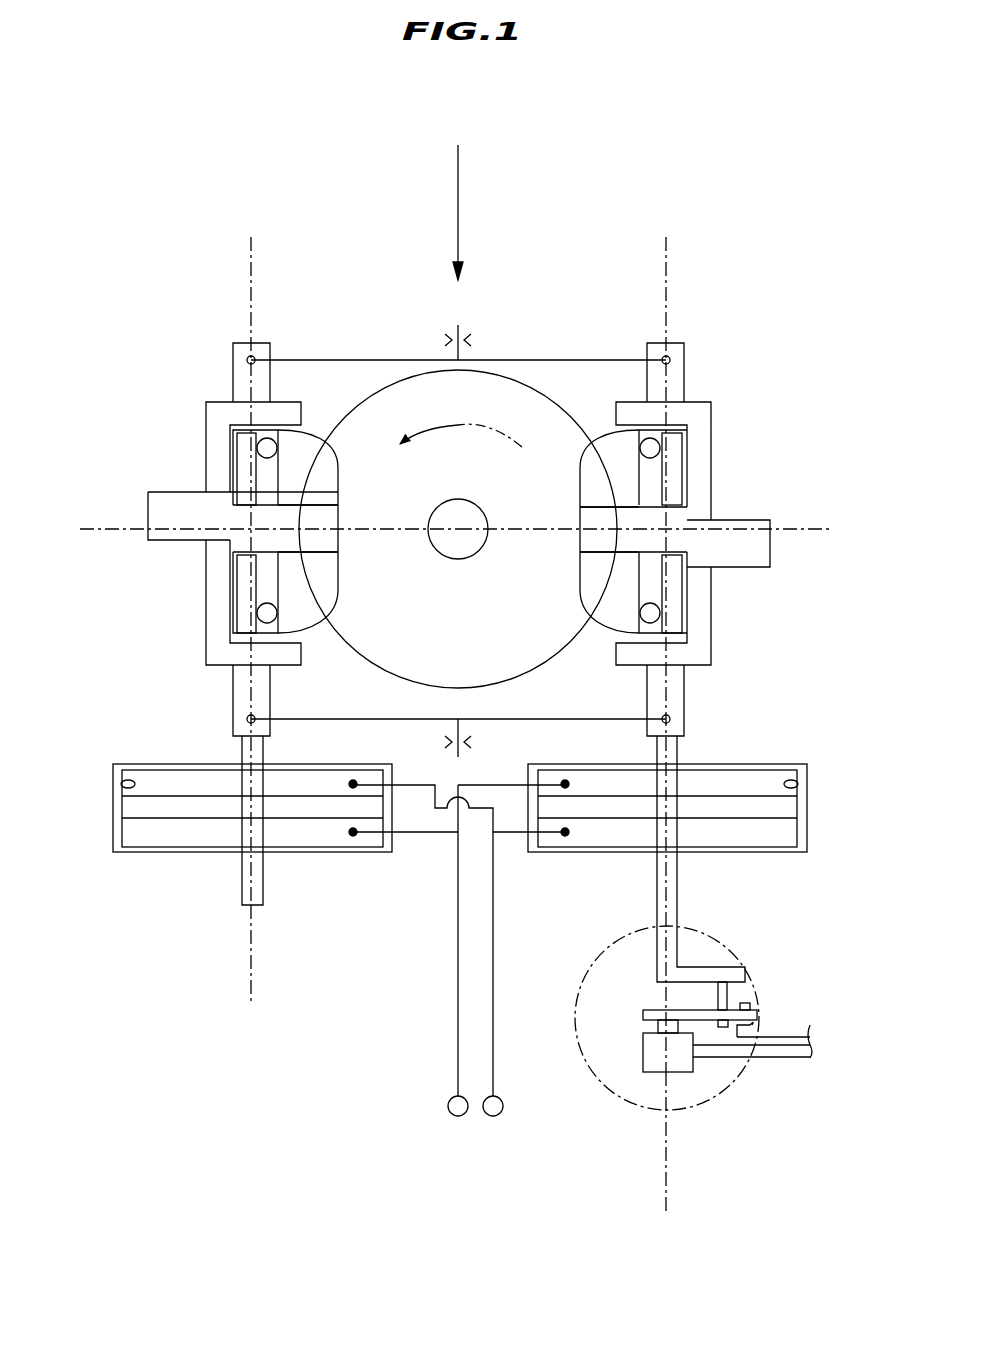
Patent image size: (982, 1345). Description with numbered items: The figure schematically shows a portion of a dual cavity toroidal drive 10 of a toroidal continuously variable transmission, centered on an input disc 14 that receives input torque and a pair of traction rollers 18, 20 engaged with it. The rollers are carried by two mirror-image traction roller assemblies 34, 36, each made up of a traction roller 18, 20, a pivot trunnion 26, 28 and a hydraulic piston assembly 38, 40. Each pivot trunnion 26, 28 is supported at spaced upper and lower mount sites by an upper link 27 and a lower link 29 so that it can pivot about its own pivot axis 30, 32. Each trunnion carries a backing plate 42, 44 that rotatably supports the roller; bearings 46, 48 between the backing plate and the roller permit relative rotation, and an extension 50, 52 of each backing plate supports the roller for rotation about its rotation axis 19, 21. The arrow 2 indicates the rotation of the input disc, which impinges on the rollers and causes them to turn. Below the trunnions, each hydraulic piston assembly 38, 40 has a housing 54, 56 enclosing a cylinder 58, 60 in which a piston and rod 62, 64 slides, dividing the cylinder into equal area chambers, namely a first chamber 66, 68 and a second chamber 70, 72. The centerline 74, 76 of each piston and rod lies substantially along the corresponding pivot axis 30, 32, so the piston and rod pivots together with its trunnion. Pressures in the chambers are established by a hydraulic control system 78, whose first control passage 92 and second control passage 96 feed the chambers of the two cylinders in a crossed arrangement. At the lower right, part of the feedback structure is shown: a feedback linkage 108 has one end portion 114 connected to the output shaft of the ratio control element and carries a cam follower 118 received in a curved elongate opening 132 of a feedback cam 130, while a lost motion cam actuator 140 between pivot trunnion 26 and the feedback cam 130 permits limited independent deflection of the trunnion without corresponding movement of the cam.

The workpiece feed direction arrow 2 is at (460, 208).
The dual cavity toroidal drive 10 is at (630, 185).
The input disc 14 is at (490, 370).
The traction roller 18 is at (578, 440).
The rotation axis 19 is at (818, 529).
The traction roller 20 is at (340, 440).
The rotation axis 21 is at (100, 529).
The pivot trunnion 26 is at (684, 360).
The upper link 27 is at (610, 360).
The pivot trunnion 28 is at (233, 360).
The lower link 29 is at (580, 719).
The pivot axis 30 is at (666, 264).
The pivot axis 32 is at (251, 264).
The traction roller assembly 34 is at (728, 385).
The traction roller assembly 36 is at (190, 385).
The hydraulic piston assembly 38 is at (812, 852).
The hydraulic piston assembly 40 is at (108, 852).
The backing plate 42 is at (676, 448).
The backing plate 44 is at (240, 448).
The bearings 46 is at (650, 452).
The bearings 48 is at (267, 452).
The extension 50 is at (580, 567).
The extension 52 is at (340, 567).
The housing 54 is at (800, 764).
The housing 56 is at (155, 764).
The cylinder 58 is at (798, 784).
The cylinder 60 is at (122, 784).
The piston and rod 62 is at (600, 820).
The piston and rod 64 is at (318, 820).
The first chamber 66 is at (740, 775).
The first chamber 68 is at (177, 835).
The second chamber 70 is at (740, 835).
The second chamber 72 is at (177, 775).
The centerline 74 is at (666, 1175).
The centerline 76 is at (251, 964).
The hydraulic control system 78 is at (425, 1098).
The first control passage 92 is at (455, 985).
The second control passage 96 is at (495, 985).
The feedback linkage 108 is at (770, 1028).
The one end portion 114 is at (740, 1022).
The cam follower 118 is at (727, 1005).
The feedback cam 130 is at (750, 1005).
The curved elongate opening 132 is at (712, 963).
The lost motion cam actuator 140 is at (625, 1017).